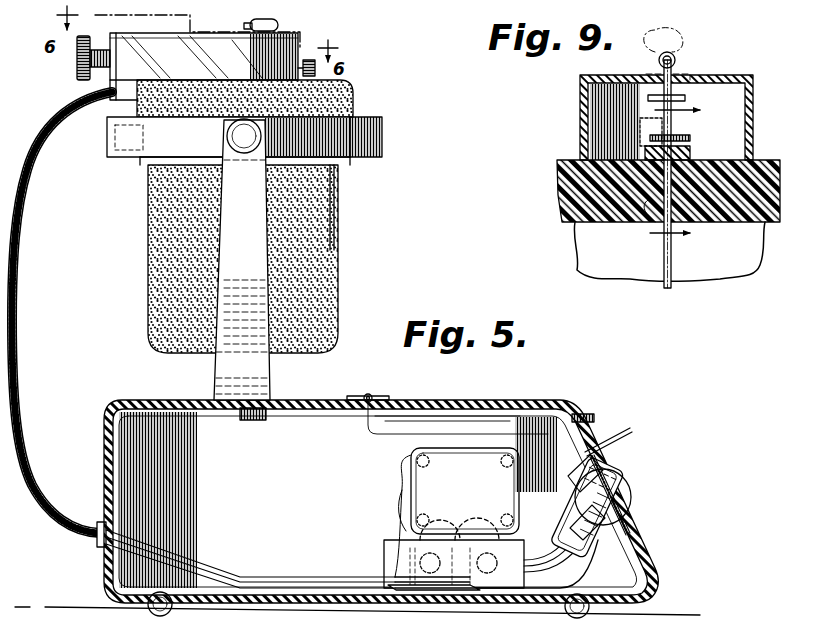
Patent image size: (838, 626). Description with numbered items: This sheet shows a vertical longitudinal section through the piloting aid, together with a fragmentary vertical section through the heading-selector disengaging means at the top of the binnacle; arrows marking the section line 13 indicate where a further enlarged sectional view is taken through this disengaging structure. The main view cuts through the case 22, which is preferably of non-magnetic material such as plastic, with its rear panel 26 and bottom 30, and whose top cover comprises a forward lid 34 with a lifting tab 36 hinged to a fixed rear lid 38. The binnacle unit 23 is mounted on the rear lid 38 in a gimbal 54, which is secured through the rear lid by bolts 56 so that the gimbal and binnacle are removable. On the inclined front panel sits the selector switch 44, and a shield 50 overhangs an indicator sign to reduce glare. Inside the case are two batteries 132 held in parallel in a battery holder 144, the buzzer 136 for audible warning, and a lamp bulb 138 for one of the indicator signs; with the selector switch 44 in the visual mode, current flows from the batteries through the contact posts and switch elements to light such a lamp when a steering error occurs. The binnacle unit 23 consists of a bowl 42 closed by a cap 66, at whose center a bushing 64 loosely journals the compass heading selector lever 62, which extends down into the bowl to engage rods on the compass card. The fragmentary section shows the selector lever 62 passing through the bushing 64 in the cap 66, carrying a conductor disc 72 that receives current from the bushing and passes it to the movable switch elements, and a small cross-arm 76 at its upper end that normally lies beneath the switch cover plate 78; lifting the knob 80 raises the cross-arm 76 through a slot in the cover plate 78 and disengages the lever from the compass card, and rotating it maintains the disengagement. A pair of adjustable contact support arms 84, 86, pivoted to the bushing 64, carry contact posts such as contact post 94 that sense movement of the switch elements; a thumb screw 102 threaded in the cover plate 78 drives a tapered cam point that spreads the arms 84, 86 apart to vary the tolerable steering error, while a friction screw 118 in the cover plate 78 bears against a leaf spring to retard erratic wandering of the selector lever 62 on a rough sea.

In FIG. 9, the flow direction arrows 13 is at (689, 179).
In FIG. 5, the case 22 is at (346, 394).
In FIG. 5, the binnacle unit 23 is at (340, 290).
In FIG. 5, the rear panel 26 is at (104, 487).
In FIG. 5, the bottom 30 is at (552, 602).
In FIG. 5, the forward lid 34 is at (496, 404).
In FIG. 5, the lifting tab 36 is at (590, 416).
In FIG. 5, the fixed rear lid 38 is at (296, 402).
In FIG. 5, the bowl 42 is at (150, 322).
In FIG. 5, the selector switch 44 is at (658, 508).
In FIG. 5, the shield 50 is at (628, 426).
In FIG. 5, the gimbal 54 is at (256, 226).
In FIG. 5, the bolts 56 is at (256, 418).
In FIG. 9, the selector lever 62 is at (664, 256).
In FIG. 9, the bushing 64 is at (655, 226).
In FIG. 5, the cap 66 is at (352, 100).
In FIG. 9, the cap 66 is at (572, 170).
In FIG. 9, the conductor disc 72 is at (692, 137).
In FIG. 9, the cross-arm 76 is at (686, 98).
In FIG. 5, the cover plate 78 is at (168, 34).
In FIG. 9, the cover plate 78 is at (708, 76).
In FIG. 5, the knob 80 is at (272, 20).
In FIG. 9, the knob 80 is at (675, 50).
In FIG. 9, the adjustable contact support arm 84 is at (692, 152).
In FIG. 9, the adjustable contact support arm 86 is at (648, 132).
In FIG. 5, the contact post 94 is at (193, 14).
In FIG. 5, the thumb screw 102 is at (80, 54).
In FIG. 5, the friction screw 118 is at (312, 58).
In FIG. 5, the batteries 132 is at (494, 524).
In FIG. 5, the buzzer 136 is at (485, 501).
In FIG. 5, the lamp bulb 138 is at (602, 532).
In FIG. 5, the battery holder 144 is at (394, 560).